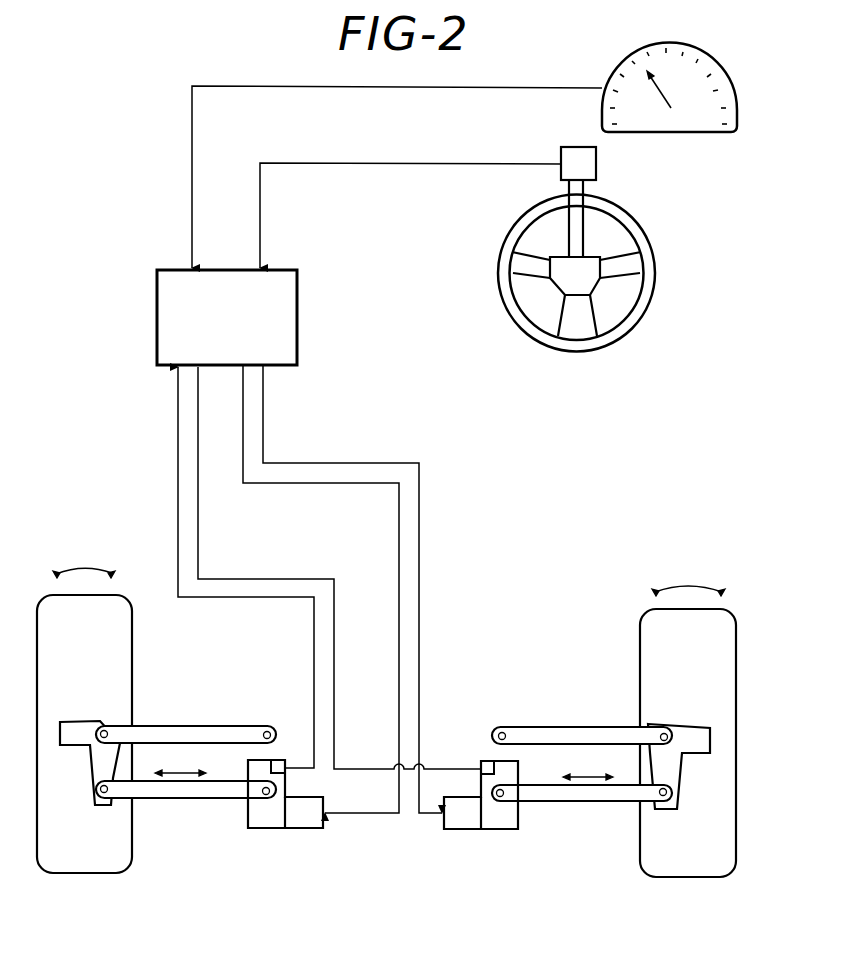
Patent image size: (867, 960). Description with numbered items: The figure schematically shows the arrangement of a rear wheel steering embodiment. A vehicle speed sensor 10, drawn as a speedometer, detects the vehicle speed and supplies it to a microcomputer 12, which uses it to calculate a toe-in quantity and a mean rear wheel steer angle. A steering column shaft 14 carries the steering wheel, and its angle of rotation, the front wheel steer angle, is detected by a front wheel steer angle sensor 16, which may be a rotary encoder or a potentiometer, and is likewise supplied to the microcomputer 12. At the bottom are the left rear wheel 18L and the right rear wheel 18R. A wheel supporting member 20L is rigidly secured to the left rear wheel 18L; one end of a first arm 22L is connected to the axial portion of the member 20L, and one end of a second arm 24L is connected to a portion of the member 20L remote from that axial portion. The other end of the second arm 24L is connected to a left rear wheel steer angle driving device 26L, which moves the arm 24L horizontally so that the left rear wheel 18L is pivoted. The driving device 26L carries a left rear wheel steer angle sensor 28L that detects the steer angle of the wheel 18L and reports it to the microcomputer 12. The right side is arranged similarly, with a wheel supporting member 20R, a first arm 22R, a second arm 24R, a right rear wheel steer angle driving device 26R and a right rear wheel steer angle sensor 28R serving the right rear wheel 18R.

The vehicle speed sensor 10 is at (728, 71).
The microcomputer 12 is at (298, 330).
The steering column shaft 14 is at (585, 190).
The front wheel steer angle sensor 16 is at (598, 164).
The left rear wheel 18L is at (132, 648).
The right rear wheel 18R is at (640, 648).
The wheel supporting member 20L is at (73, 721).
The wheel supporting member 20R is at (693, 725).
The first arm 22L is at (200, 725).
The first arm 22R is at (563, 727).
The second arm 24L is at (187, 800).
The second arm 24R is at (572, 805).
The left rear wheel steer angle driving device 26L is at (280, 830).
The right rear wheel steer angle driving device 26R is at (453, 832).
The left rear wheel steer angle sensor 28L is at (280, 758).
The right rear wheel steer angle sensor 28R is at (487, 760).